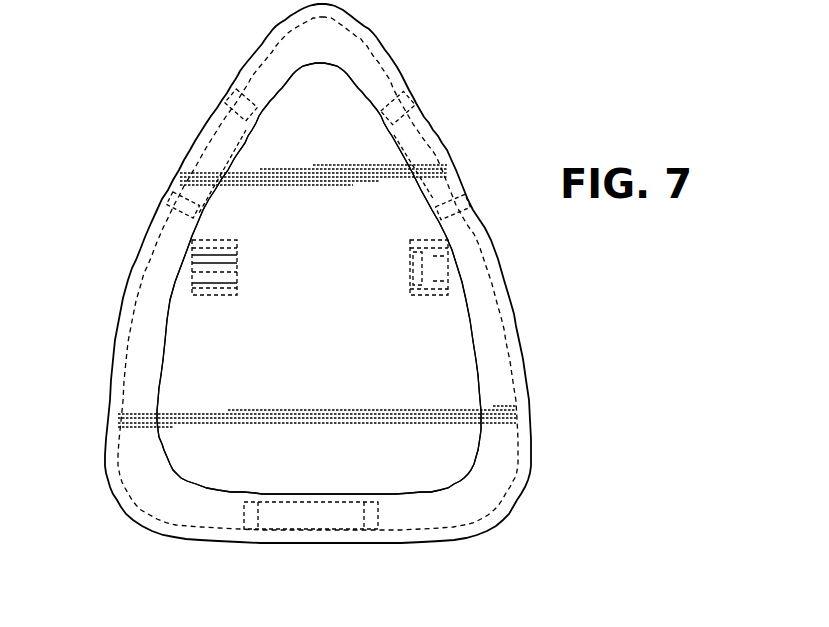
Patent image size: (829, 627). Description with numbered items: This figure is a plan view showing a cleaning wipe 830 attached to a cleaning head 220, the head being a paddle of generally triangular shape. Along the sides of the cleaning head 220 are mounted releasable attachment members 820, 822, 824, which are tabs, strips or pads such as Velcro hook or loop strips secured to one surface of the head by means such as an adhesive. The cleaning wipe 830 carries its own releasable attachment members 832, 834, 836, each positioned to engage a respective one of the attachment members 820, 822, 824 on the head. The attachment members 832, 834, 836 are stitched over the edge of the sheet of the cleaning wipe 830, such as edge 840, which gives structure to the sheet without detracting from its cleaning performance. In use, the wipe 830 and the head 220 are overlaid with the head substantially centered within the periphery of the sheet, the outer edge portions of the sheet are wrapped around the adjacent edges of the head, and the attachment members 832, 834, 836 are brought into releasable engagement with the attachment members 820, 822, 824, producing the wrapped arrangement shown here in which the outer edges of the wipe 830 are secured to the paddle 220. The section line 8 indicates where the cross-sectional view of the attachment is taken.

The section line 8- 8 is at (180, 145).
The cleaning head 220 is at (388, 343).
The releasable attachment member 820 is at (164, 192).
The releasable attachment member 822 is at (463, 192).
The releasable attachment member 824 is at (312, 561).
The cleaning wipe 830 is at (133, 272).
The releasable attachment member 832 is at (212, 162).
The releasable attachment member 834 is at (440, 126).
The releasable attachment member 836 is at (335, 522).
The edge 840 is at (162, 348).